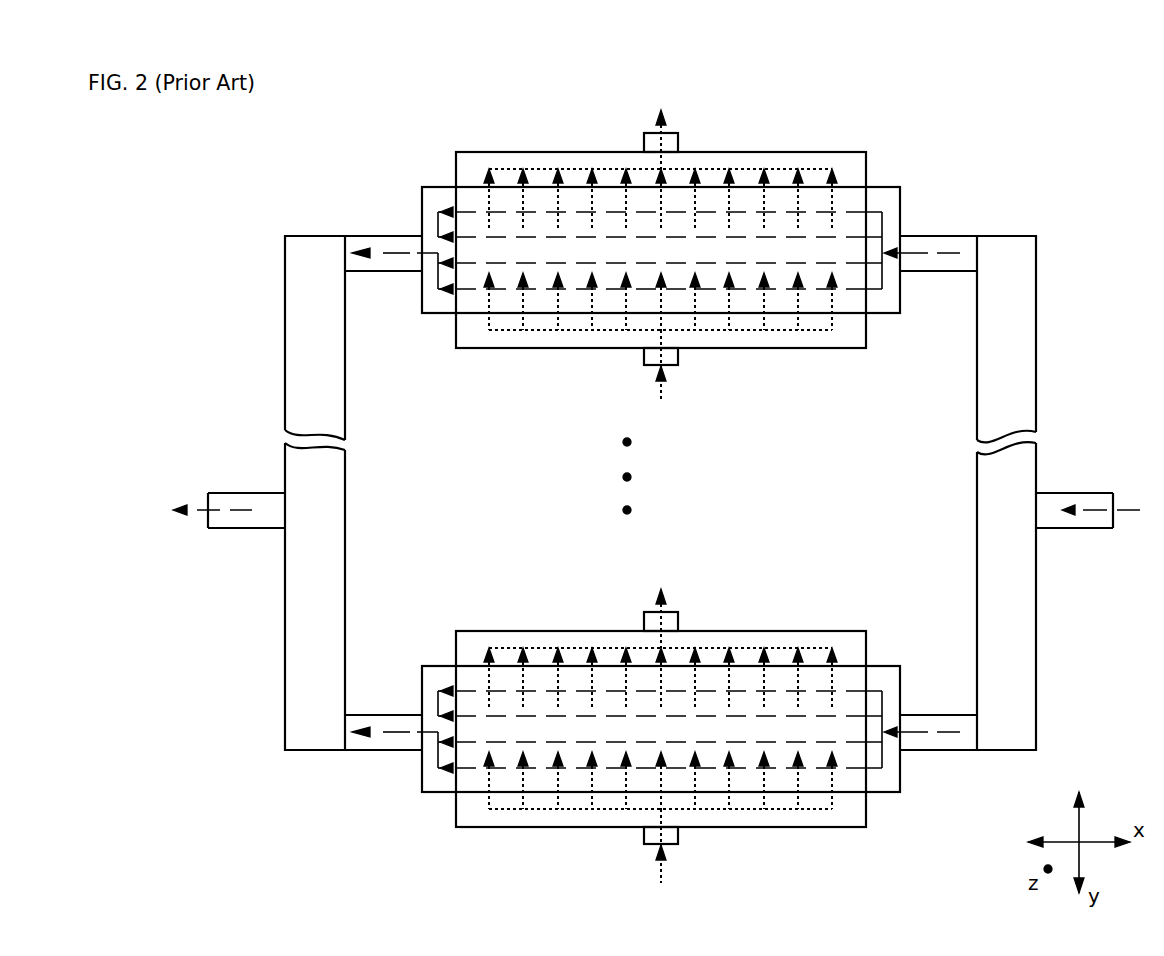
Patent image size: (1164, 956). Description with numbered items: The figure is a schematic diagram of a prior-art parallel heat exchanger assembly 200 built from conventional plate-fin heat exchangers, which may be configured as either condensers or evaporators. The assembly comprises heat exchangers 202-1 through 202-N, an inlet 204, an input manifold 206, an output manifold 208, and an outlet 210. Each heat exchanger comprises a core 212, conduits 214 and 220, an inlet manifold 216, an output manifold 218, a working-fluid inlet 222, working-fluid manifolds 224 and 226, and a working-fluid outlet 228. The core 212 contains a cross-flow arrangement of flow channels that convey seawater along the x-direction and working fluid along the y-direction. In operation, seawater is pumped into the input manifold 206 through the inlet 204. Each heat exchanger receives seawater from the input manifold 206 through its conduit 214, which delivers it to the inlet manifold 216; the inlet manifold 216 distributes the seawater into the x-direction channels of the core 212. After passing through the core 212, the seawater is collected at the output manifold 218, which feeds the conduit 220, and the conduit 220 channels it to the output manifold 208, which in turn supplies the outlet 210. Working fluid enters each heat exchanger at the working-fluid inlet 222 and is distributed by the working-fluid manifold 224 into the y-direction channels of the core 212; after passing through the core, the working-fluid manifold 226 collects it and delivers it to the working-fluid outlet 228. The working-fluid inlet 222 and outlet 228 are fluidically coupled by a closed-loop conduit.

The heat exchanger assembly 200 is at (207, 176).
The heat exchanger 202-1 is at (394, 178).
The heat exchanger 202-N is at (393, 833).
The inlet 204 is at (1070, 492).
The input manifold 206 is at (1027, 367).
The output manifold 208 is at (285, 733).
The outlet 210 is at (242, 492).
The core 212 is at (627, 245).
The conduit 214 is at (940, 272).
The inlet manifold 216 is at (885, 313).
The output manifold 218 is at (435, 313).
The conduit 220 is at (383, 272).
The working-fluid inlet 222 is at (680, 356).
The working-fluid manifold 224 is at (473, 350).
The working-fluid manifold 226 is at (490, 151).
The working-fluid outlet 228 is at (680, 144).